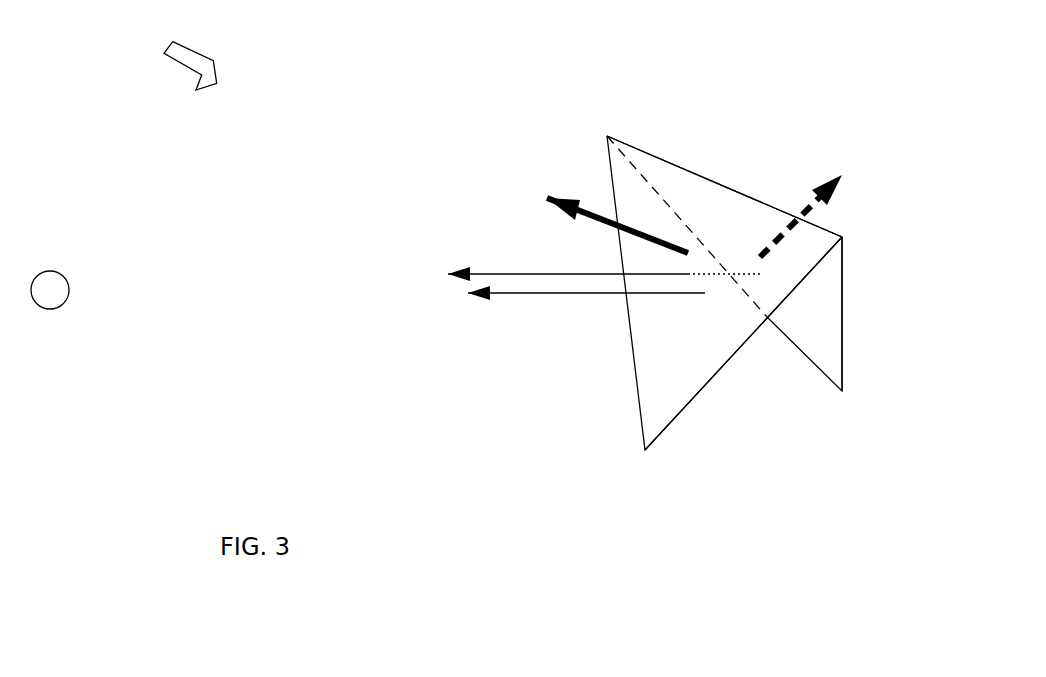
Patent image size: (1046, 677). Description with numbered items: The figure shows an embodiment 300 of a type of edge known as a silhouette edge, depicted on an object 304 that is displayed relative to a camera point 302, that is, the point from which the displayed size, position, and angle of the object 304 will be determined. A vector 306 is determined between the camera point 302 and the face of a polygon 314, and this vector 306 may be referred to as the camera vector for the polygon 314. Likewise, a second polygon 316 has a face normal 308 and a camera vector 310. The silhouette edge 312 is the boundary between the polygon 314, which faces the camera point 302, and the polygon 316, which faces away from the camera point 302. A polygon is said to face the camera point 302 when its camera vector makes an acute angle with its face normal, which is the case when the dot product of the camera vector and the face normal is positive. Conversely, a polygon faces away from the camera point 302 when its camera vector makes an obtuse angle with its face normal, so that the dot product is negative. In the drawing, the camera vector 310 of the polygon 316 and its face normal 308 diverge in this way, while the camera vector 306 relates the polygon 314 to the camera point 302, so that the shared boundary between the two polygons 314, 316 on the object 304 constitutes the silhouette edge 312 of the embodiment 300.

The silhouette edge embodiment 300 is at (173, 53).
The camera point 302 is at (68, 350).
The prism 304 is at (567, 175).
The camera vector 306 is at (527, 253).
The face normal 308 is at (803, 175).
The camera vector 310 is at (567, 313).
The silhouette edge 312 is at (665, 135).
The polygon 314 is at (665, 353).
The polygon 316 is at (822, 313).